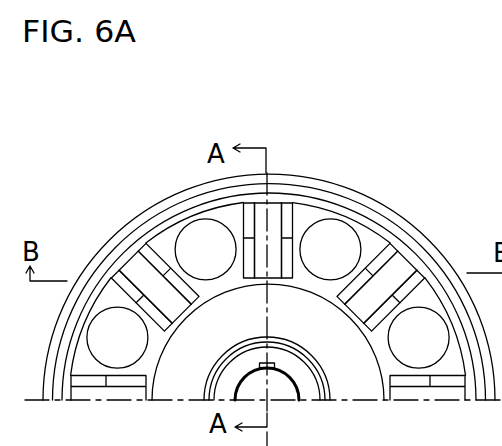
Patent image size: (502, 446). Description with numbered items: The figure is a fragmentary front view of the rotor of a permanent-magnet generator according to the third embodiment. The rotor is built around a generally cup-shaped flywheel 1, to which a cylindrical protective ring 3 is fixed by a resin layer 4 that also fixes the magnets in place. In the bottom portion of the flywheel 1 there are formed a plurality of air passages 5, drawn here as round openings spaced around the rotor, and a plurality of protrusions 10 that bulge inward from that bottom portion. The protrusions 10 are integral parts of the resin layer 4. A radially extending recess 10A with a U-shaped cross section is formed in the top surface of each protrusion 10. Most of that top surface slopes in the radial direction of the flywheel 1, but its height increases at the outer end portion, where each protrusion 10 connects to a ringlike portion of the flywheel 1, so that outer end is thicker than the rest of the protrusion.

The flywheel 1 is at (101, 251).
The protective ring 3 is at (173, 221).
The resin layer 4 is at (131, 225).
The air passages 5 is at (335, 245).
The protrusions 10 is at (288, 204).
The recess 10A is at (272, 214).